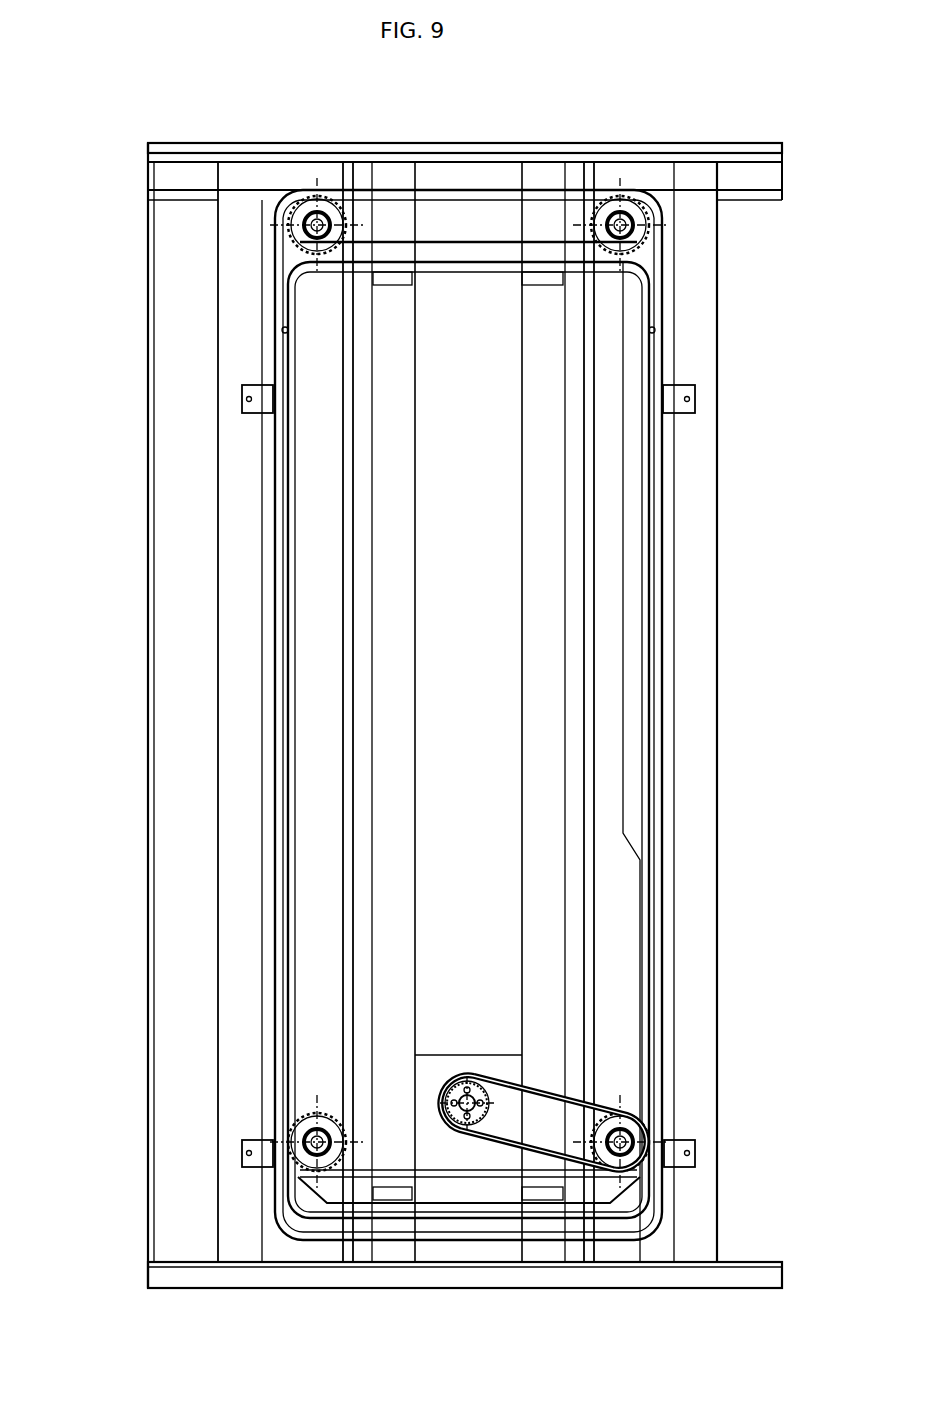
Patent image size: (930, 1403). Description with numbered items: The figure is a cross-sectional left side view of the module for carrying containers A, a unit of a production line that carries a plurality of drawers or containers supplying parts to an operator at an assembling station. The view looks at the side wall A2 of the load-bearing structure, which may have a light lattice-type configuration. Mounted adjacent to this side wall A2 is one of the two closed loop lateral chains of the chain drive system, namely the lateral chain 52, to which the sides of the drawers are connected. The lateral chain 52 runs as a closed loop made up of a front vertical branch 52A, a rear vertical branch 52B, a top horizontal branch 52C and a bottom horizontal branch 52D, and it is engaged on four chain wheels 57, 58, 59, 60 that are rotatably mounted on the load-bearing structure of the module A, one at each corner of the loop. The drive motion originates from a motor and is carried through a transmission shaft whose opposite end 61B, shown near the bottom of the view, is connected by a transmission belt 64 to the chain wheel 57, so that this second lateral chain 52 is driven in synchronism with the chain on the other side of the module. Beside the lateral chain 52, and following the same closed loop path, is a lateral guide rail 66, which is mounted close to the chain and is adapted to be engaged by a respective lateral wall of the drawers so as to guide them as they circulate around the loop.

The module for carrying containers A is at (138, 114).
The side wall A2 is at (170, 530).
The lateral chain 52 is at (488, 700).
The front vertical branch 52A is at (650, 540).
The rear vertical branch 52B is at (288, 692).
The top horizontal branch 52C is at (390, 193).
The bottom horizontal branch 52D is at (460, 1180).
The chain wheel 57 is at (610, 1128).
The chain wheel 58 is at (317, 1118).
The chain wheel 59 is at (307, 212).
The chain wheel 60 is at (636, 212).
The end of the transmission shaft 61B is at (476, 1092).
The transmission belt 64 is at (538, 1090).
The lateral guide rail 66 is at (466, 245).